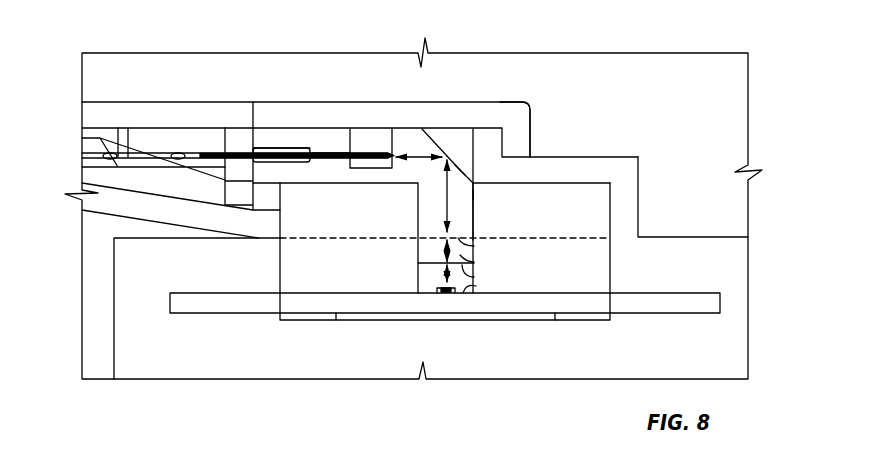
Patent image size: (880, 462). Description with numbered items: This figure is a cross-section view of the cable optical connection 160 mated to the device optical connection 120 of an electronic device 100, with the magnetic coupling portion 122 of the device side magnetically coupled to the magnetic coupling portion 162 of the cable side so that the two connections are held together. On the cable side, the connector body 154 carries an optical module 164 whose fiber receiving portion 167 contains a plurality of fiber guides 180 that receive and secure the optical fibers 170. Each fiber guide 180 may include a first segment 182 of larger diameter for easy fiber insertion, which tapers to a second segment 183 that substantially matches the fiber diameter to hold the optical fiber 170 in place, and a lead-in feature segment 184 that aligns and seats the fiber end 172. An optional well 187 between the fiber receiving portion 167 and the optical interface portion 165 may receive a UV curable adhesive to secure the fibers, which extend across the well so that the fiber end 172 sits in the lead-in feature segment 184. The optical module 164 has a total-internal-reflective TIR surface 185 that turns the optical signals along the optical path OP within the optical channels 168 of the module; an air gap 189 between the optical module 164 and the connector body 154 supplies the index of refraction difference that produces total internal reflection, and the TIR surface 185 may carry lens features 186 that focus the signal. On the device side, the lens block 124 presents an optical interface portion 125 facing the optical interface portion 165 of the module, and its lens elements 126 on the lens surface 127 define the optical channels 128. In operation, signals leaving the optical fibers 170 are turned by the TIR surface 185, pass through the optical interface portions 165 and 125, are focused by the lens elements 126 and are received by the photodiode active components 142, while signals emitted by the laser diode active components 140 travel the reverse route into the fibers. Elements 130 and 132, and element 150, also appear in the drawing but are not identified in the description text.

The electronic device 100 is at (763, 340).
The device optical connection 120 is at (700, 222).
The magnetic coupling portion 122 is at (302, 273).
The lens block 124 is at (431, 252).
The optical interface portion 125 is at (433, 238).
The lens elements 126 is at (443, 268).
The lens surface 127 is at (462, 270).
The optical channels 128 is at (460, 257).
The base plate 130 is at (640, 298).
The bottom protrusion 132 is at (470, 290).
The active components 140 is at (483, 355).
The active components 142 is at (450, 296).
The cover 150 is at (127, 82).
The connector body 154 is at (528, 100).
The cable optical connection 160 is at (620, 193).
The magnetic coupling portion 162 is at (312, 220).
The optical module 164 is at (476, 210).
The optical interface portion 165 is at (473, 243).
The fiber receiving portion 167 is at (267, 127).
The optical channels 168 is at (457, 193).
The optical fibers 170 is at (160, 153).
The fiber end 172 is at (393, 155).
The fiber guides 180 is at (285, 146).
The first segment 182 is at (307, 150).
The second segment 183 is at (328, 153).
The lead-in feature segment 184 is at (450, 146).
The TIR surface 185 is at (460, 172).
The lens features 186 is at (455, 163).
The well 187 is at (372, 146).
The air gap 189 is at (447, 153).
The optical path OP is at (437, 198).